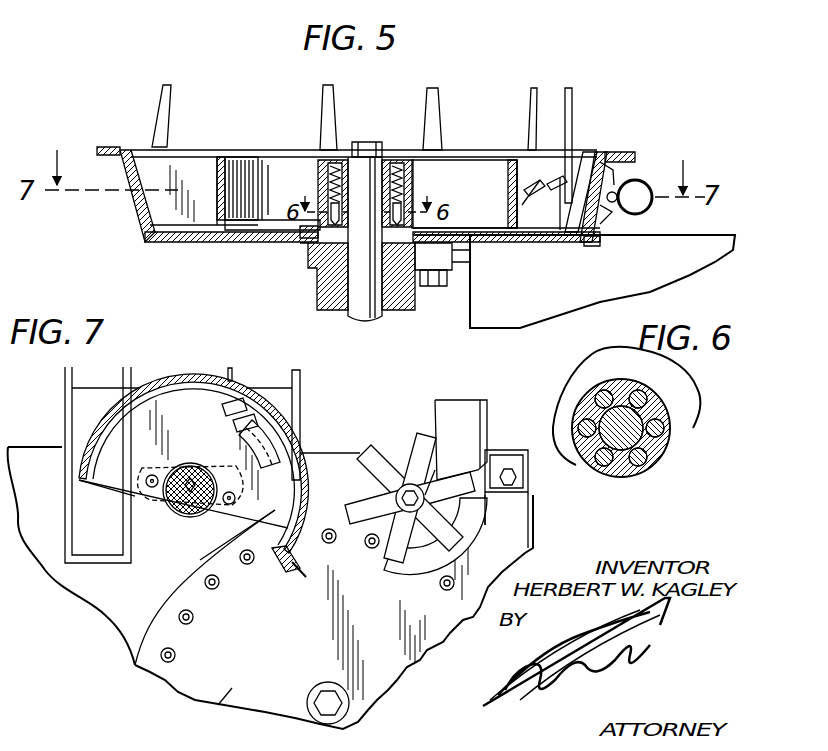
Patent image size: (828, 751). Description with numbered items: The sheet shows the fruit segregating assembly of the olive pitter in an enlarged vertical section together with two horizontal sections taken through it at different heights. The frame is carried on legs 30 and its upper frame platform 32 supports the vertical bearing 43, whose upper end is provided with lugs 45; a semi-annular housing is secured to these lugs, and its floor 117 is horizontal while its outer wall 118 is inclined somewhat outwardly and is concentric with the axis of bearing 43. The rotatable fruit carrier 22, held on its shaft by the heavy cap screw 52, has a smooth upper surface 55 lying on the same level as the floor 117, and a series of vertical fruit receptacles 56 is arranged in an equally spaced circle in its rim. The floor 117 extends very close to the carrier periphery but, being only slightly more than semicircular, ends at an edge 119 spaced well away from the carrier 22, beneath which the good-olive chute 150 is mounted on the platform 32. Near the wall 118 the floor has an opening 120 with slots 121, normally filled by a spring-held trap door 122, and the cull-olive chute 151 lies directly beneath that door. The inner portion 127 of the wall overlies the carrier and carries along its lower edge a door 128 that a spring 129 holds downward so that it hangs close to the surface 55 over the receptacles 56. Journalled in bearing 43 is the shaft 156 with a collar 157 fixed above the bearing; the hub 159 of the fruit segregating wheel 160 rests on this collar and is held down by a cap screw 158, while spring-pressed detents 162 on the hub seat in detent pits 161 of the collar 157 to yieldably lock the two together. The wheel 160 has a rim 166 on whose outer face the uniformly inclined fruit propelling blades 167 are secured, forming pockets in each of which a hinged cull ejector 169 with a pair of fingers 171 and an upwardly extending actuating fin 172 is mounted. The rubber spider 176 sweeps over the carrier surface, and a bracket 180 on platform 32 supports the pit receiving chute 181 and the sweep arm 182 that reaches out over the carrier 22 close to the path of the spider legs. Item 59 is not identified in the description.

In FIG. 7, the fruit carrier 22 is at (168, 683).
In FIG. 7, the legs 30 is at (495, 452).
In FIG. 7, the upper frame platform 32 is at (88, 596).
In FIG. 5, the bearing 43 is at (410, 310).
In FIG. 7, the bearing 43 is at (172, 512).
In FIG. 5, the lugs 45 is at (452, 258).
In FIG. 7, the lugs 45 is at (150, 474).
In FIG. 7, the cap screw 52 is at (324, 701).
In FIG. 7, the upper surface 55 is at (222, 690).
In FIG. 7, the fruit receptacles 56 is at (174, 652).
In FIG. 6, the bearing body 59 is at (662, 445).
In FIG. 5, the floor 117 is at (196, 243).
In FIG. 7, the floor 117 is at (110, 472).
In FIG. 6, the floor 117 is at (600, 365).
In FIG. 5, the outer wall 118 is at (131, 210).
In FIG. 7, the outer wall 118 is at (182, 363).
In FIG. 7, the edge 119 is at (276, 511).
In FIG. 7, the opening 120 is at (268, 430).
In FIG. 7, the slots 121 is at (250, 396).
In FIG. 7, the trap door 122 is at (282, 437).
In FIG. 5, the inner portion 127 is at (626, 155).
In FIG. 5, the door 128 is at (592, 247).
In FIG. 7, the door 128 is at (282, 568).
In FIG. 5, the spring 129 is at (641, 184).
In FIG. 7, the spring 129 is at (300, 568).
In FIG. 7, the good-olive chute 150 is at (66, 405).
In FIG. 7, the cull-olive chute 151 is at (272, 392).
In FIG. 5, the shaft 156 is at (364, 315).
In FIG. 7, the shaft 156 is at (190, 508).
In FIG. 6, the shaft 156 is at (623, 429).
In FIG. 5, the collar 157 is at (434, 264).
In FIG. 7, the collar 157 is at (205, 470).
In FIG. 5, the cap screw 158 is at (368, 142).
In FIG. 5, the hub 159 is at (328, 180).
In FIG. 5, the fruit segregating wheel 160 is at (473, 160).
In FIG. 5, the detent pits 161 is at (286, 242).
In FIG. 5, the detents 162 is at (404, 222).
In FIG. 6, the detents 162 is at (641, 401).
In FIG. 5, the rim 166 is at (516, 206).
In FIG. 5, the fruit propelling blades 167 is at (174, 163).
In FIG. 5, the cull ejector 169 is at (562, 207).
In FIG. 5, the fingers 171 is at (548, 192).
In FIG. 5, the actuating fin 172 is at (165, 92).
In FIG. 7, the spider 176 is at (372, 448).
In FIG. 7, the bracket 180 is at (512, 491).
In FIG. 7, the pit receiving chute 181 is at (454, 408).
In FIG. 7, the sweep arm 182 is at (408, 563).